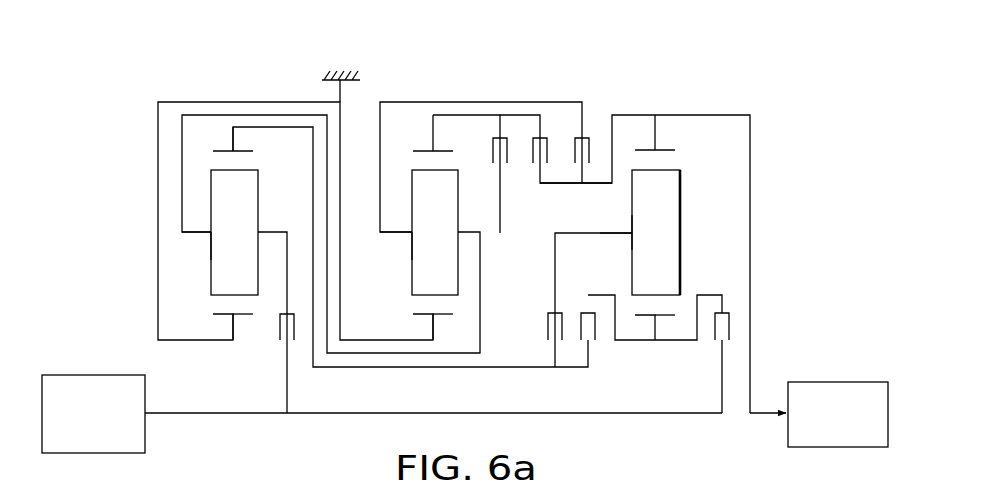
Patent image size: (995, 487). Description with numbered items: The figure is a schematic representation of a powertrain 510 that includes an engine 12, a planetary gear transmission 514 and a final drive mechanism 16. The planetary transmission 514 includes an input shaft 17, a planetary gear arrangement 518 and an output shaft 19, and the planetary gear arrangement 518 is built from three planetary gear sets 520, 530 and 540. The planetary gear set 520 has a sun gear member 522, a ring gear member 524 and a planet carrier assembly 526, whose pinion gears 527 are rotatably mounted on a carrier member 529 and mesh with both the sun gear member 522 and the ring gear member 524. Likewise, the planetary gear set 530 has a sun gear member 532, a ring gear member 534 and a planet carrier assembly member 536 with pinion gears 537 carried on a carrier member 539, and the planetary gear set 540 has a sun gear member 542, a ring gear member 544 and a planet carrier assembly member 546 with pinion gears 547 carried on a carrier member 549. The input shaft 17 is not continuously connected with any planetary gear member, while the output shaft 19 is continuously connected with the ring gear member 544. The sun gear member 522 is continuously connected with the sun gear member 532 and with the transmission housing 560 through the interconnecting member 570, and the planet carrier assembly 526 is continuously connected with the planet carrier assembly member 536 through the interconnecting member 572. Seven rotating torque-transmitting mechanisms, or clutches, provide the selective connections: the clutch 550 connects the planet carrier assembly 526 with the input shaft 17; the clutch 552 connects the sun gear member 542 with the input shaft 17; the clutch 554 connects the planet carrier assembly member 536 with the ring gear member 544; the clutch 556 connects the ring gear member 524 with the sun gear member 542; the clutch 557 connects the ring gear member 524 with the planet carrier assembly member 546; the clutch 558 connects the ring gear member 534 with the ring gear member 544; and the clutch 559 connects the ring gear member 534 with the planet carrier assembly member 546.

The powertrain 510 is at (143, 180).
The engine 12 is at (113, 358).
The final drive mechanism 16 is at (823, 370).
The input shaft 17 is at (200, 418).
The output shaft 19 is at (757, 418).
The planetary gear transmission 514 is at (435, 95).
The planetary gear arrangement 518 is at (521, 95).
The planetary gear set 520 is at (222, 318).
The sun gear member 522 is at (245, 318).
The ring gear member 524 is at (225, 148).
The planet carrier assembly 526 is at (201, 243).
The pinion gears 527 is at (234, 232).
The carrier member 529 is at (200, 235).
The planetary gear set 530 is at (422, 318).
The sun gear member 532 is at (445, 318).
The ring gear member 534 is at (420, 150).
The planet carrier assembly member 536 is at (406, 240).
The pinion gears 537 is at (435, 232).
The carrier member 539 is at (396, 235).
The planetary gear set 540 is at (648, 318).
The sun gear member 542 is at (668, 318).
The ring gear member 544 is at (643, 150).
The planet carrier assembly member 546 is at (623, 229).
The pinion gears 547 is at (656, 232).
The carrier member 549 is at (612, 238).
The clutch 550 is at (297, 340).
The clutch 552 is at (736, 311).
The clutch 554 is at (592, 133).
The clutch 556 is at (580, 341).
The clutch 557 is at (546, 341).
The clutch 558 is at (552, 134).
The clutch 559 is at (488, 133).
The transmission housing 560 is at (327, 78).
The interconnecting member 570 is at (262, 100).
The interconnecting member 572 is at (300, 115).